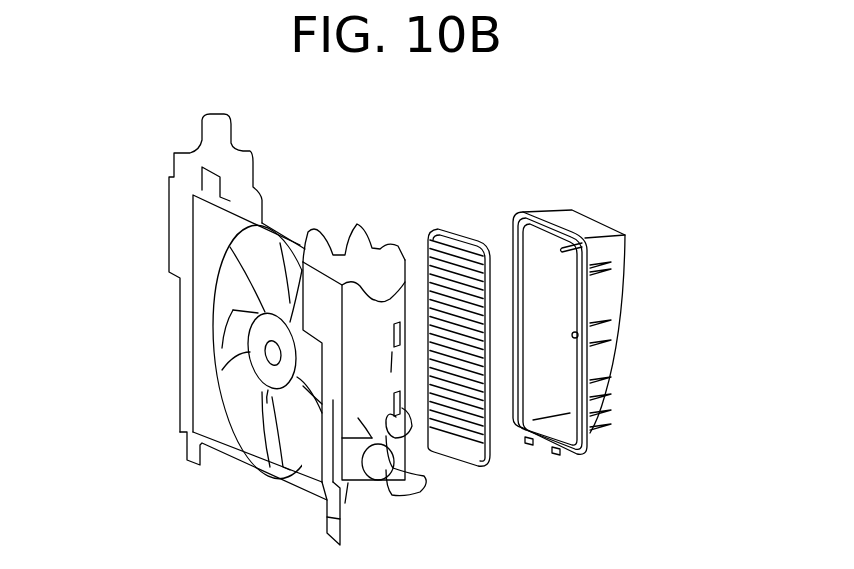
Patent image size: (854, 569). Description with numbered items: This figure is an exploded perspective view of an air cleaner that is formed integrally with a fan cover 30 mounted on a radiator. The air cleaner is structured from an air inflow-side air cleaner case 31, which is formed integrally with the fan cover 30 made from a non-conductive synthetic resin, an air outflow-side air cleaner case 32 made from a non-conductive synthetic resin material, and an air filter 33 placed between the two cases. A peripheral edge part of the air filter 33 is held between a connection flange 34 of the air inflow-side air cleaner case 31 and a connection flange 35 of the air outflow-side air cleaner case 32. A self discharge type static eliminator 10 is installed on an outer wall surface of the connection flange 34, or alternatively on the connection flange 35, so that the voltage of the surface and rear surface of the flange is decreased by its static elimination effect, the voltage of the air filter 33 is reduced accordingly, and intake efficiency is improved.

The self discharge type static eliminator 10 is at (402, 336).
The fan cover 30 is at (203, 232).
The air inflow-side air cleaner case 31 is at (384, 250).
The air outflow-side air cleaner case 32 is at (607, 296).
The air filter 33 is at (456, 272).
The connection flange 34 is at (391, 372).
The connection flange 35 is at (553, 225).